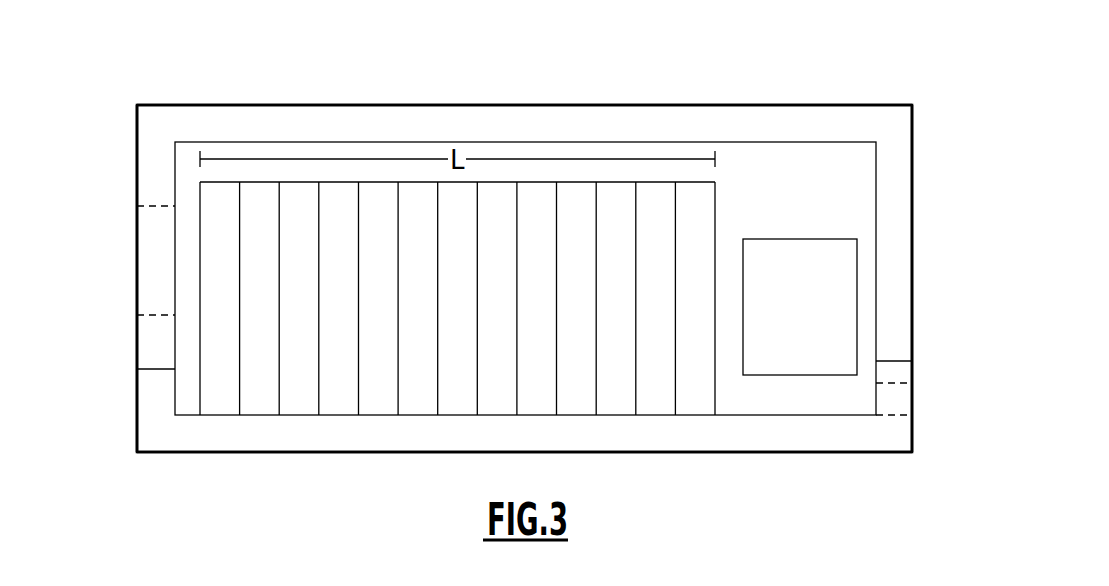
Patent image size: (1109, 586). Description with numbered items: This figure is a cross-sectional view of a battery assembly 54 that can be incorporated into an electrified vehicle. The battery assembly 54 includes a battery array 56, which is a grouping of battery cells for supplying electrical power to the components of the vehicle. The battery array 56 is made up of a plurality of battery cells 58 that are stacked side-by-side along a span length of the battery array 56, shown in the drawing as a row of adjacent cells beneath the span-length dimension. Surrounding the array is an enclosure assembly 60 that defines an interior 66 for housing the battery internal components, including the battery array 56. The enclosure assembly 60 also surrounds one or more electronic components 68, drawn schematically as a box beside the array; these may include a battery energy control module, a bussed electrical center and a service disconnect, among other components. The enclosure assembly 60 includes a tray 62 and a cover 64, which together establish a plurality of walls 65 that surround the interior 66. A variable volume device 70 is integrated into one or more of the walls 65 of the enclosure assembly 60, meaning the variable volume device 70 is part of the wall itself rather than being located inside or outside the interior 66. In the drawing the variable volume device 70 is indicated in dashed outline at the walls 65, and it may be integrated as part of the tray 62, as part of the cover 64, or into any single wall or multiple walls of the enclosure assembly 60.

The battery assembly 54 is at (720, 33).
The battery array 56 is at (457, 337).
The battery cells 58 is at (332, 402).
The enclosure assembly 60 is at (868, 94).
The tray 62 is at (811, 440).
The cover 64 is at (893, 204).
The walls 65 is at (137, 151).
The interior 66 is at (763, 160).
The electronic components 68 is at (816, 318).
The variable volume device 70 is at (155, 243).